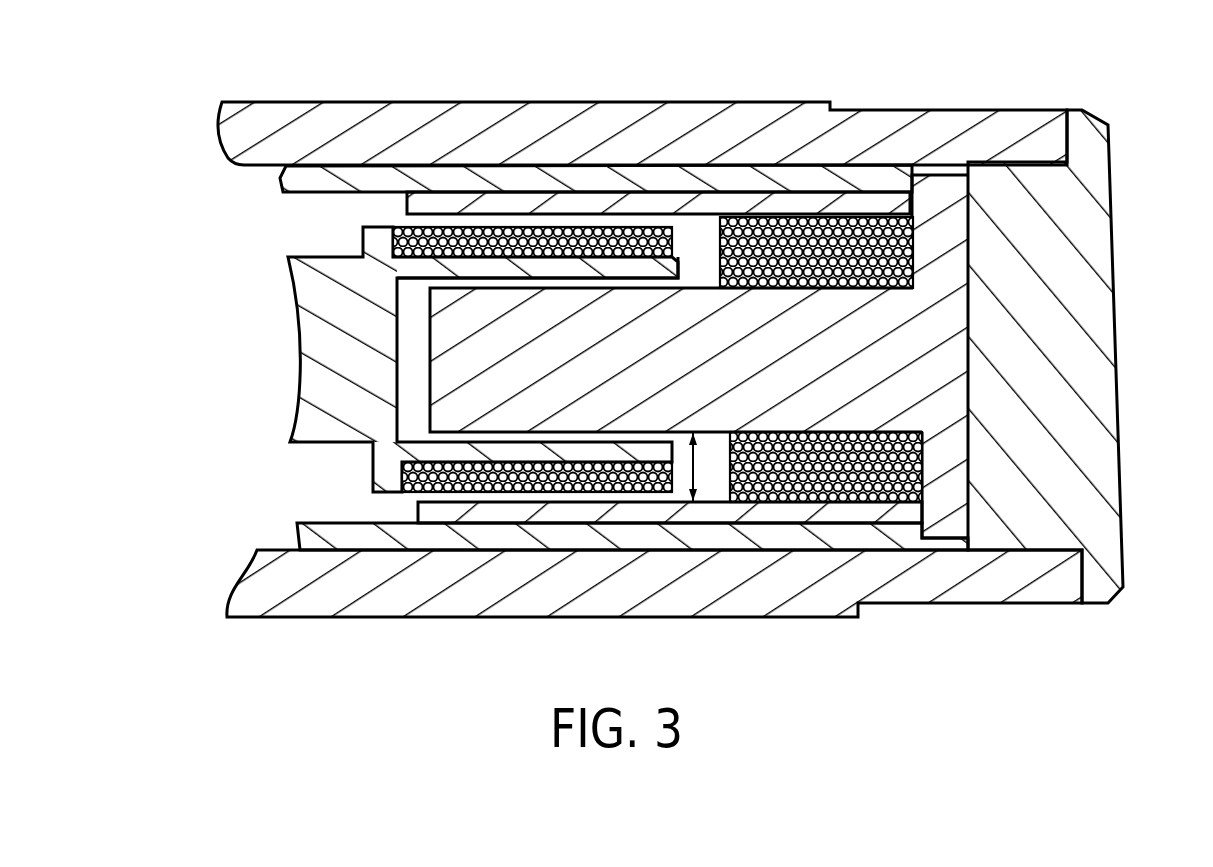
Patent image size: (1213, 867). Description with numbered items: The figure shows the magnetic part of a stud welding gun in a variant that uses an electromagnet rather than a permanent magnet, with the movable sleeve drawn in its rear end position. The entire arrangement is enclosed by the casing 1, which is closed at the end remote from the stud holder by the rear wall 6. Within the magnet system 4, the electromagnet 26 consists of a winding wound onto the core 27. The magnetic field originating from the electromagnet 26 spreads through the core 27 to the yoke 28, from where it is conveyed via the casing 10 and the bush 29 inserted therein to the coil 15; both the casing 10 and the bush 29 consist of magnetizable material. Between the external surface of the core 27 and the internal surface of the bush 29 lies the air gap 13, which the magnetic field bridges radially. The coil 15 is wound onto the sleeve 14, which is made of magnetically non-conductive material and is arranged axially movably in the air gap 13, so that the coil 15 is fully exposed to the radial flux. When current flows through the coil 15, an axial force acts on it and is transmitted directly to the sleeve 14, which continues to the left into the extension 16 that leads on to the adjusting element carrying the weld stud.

The casing 1 is at (805, 127).
The magnet system 4 is at (703, 232).
The rear wall 6 is at (1069, 175).
The casing 10 is at (478, 172).
The air gap 13 is at (697, 467).
The sleeve 14 is at (680, 275).
The coil 15 is at (400, 223).
The extension 16 is at (300, 290).
The electromagnet 26 is at (740, 482).
The core 27 is at (457, 383).
The yoke 28 is at (950, 235).
The bush 29 is at (452, 205).